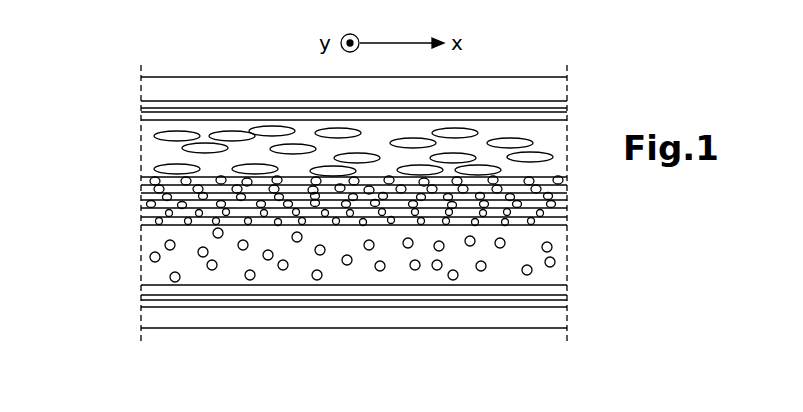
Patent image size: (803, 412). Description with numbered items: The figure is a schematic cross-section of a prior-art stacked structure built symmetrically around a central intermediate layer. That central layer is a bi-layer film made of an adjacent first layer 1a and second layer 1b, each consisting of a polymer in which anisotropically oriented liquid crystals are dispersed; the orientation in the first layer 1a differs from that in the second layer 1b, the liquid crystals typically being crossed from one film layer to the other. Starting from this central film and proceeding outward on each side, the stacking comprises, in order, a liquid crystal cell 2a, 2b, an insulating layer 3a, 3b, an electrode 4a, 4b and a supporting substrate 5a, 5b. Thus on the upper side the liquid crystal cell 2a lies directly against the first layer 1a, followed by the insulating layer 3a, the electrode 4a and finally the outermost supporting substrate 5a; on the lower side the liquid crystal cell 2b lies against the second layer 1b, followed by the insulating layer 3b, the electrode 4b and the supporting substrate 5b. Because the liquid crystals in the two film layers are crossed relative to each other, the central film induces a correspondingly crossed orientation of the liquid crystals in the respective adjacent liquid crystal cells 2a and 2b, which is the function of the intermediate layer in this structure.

The supporting substrate 5a is at (188, 77).
The electrode 4a is at (140, 106).
The insulating layer 3a is at (143, 115).
The liquid crystal cell 2a is at (150, 150).
The first layer 1a is at (145, 188).
The second layer 1b is at (143, 212).
The liquid crystal cell 2b is at (148, 243).
The insulating layer 3b is at (143, 290).
The electrode 4b is at (140, 298).
The supporting substrate 5b is at (163, 328).